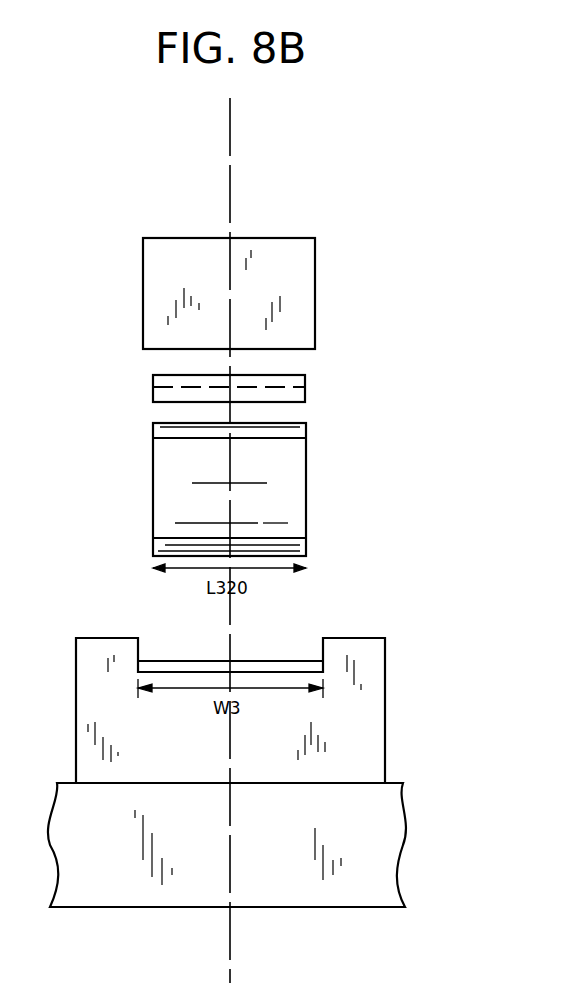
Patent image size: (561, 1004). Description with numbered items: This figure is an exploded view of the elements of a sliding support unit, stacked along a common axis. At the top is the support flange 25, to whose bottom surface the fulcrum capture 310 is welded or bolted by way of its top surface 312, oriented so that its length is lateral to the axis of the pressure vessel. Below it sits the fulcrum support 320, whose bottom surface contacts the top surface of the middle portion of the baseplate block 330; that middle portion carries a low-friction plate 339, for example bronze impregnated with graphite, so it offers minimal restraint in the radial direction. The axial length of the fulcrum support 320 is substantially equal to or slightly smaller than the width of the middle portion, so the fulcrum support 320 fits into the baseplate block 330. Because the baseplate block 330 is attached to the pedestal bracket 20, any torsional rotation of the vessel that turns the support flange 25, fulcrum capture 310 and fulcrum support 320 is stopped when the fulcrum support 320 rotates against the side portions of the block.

The support flange 25 is at (266, 238).
The fulcrum capture 310 is at (305, 388).
The top surface 312 is at (288, 375).
The fulcrum support 320 is at (307, 486).
The baseplate block 330 is at (385, 660).
The low-friction plate 339 is at (283, 661).
The pedestal bracket 20 is at (395, 812).